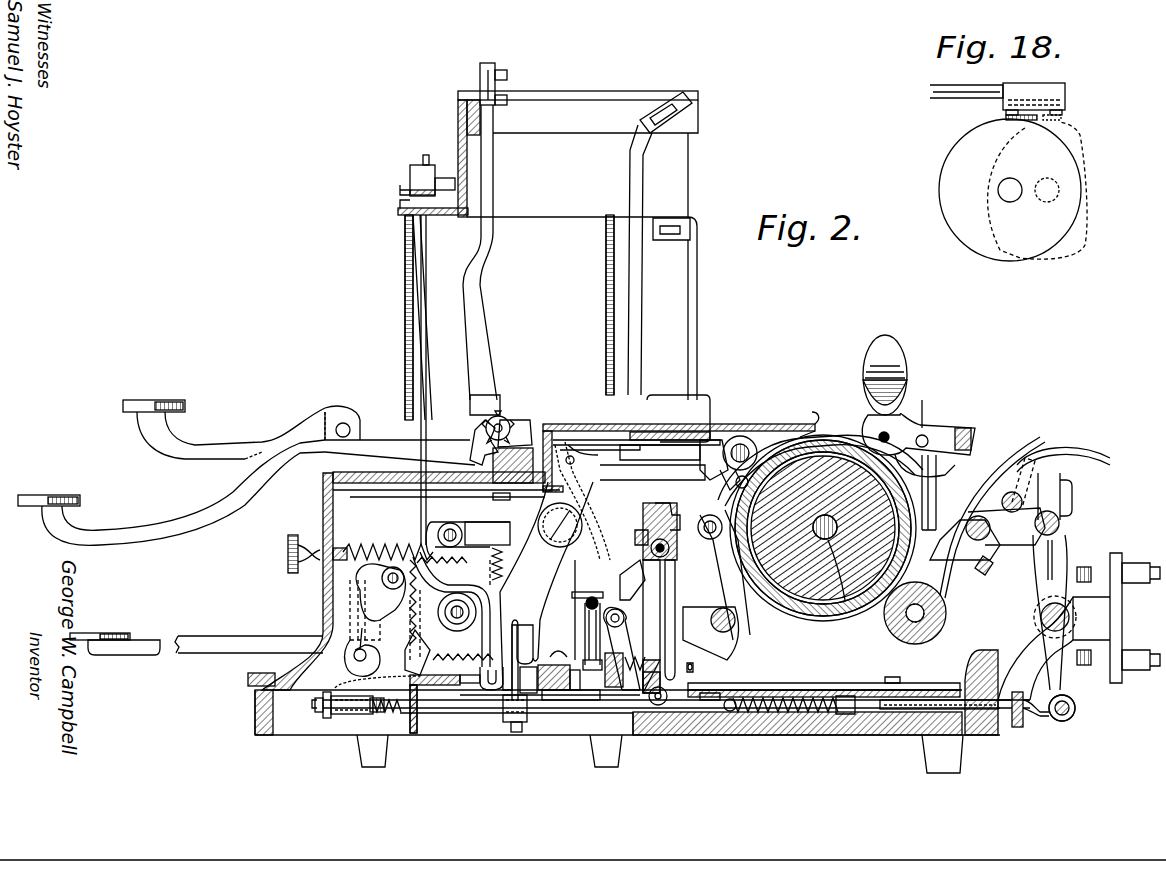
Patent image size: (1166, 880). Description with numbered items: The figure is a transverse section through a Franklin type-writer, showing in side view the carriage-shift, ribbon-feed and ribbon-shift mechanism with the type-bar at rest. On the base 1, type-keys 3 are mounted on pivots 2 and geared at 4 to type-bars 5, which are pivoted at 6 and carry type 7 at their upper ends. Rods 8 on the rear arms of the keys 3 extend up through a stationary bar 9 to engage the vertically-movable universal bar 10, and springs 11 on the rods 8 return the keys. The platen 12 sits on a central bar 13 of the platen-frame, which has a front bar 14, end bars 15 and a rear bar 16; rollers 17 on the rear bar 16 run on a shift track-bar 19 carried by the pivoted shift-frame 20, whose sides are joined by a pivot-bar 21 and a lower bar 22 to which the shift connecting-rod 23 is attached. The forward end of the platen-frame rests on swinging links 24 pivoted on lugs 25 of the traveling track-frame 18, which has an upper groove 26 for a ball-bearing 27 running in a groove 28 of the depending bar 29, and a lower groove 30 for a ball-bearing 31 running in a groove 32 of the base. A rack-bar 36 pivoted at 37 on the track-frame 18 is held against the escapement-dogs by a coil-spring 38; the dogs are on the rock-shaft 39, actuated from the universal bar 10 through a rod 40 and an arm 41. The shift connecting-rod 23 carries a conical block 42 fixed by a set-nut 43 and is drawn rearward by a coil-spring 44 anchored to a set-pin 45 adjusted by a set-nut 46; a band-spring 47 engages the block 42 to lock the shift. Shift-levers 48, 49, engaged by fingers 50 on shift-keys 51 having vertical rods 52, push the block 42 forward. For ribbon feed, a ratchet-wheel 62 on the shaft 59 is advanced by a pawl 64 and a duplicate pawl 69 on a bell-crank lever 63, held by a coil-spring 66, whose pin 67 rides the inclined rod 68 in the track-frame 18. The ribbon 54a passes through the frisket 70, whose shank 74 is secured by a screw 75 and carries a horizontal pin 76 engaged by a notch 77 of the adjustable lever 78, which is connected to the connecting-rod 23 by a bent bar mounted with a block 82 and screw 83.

In FIG. 2, the base 1 is at (322, 496).
In FIG. 2, the supports or pivots 2 is at (347, 422).
In FIG. 2, the type-keys 3 is at (186, 518).
In FIG. 2, the gearing 4 is at (496, 428).
In FIG. 2, the type-bars 5 is at (483, 300).
In FIG. 2, the type-bar pivot 6 is at (505, 425).
In FIG. 2, the type 7 is at (497, 76).
In FIG. 18, the type 7 is at (948, 90).
In FIG. 2, the rods 8 is at (405, 205).
In FIG. 2, the stationary bar 9 is at (460, 128).
In FIG. 2, the universal bar 10 is at (400, 188).
In FIG. 2, the springs 11 is at (408, 262).
In FIG. 2, the platen 12 is at (823, 460).
In FIG. 18, the platen 12 is at (1005, 250).
In FIG. 2, the central bar 13 is at (845, 605).
In FIG. 2, the front longitudinal bar 14 is at (706, 520).
In FIG. 2, the end bars 15 is at (986, 466).
In FIG. 2, the rear longitudinal bar 16 is at (992, 540).
In FIG. 2, the rollers 17 is at (1055, 497).
In FIG. 2, the track-frame 18 is at (665, 620).
In FIG. 2, the shift track-bar 19 is at (1060, 526).
In FIG. 2, the shift-frame 20 is at (1058, 660).
In FIG. 2, the pivot-bar 21 is at (1050, 610).
In FIG. 2, the bar 22 is at (1074, 705).
In FIG. 2, the shift connecting-rod 23 is at (450, 715).
In FIG. 2, the swinging links 24 is at (715, 570).
In FIG. 2, the lugs 25 is at (748, 625).
In FIG. 2, the groove 26 is at (652, 562).
In FIG. 2, the ball-bearing 27 is at (652, 546).
In FIG. 2, the groove 28 is at (652, 535).
In FIG. 2, the depending bar 29 is at (662, 515).
In FIG. 2, the groove 30 is at (693, 670).
In FIG. 2, the ball-bearing 31 is at (657, 706).
In FIG. 2, the groove 32 is at (672, 712).
In FIG. 2, the rack-bar 36 is at (622, 642).
In FIG. 2, the pivot 37 is at (640, 615).
In FIG. 2, the coil-spring 38 is at (632, 672).
In FIG. 2, the rock-shaft 39 is at (580, 697).
In FIG. 2, the rod 40 is at (425, 247).
In FIG. 2, the arm 41 is at (528, 685).
In FIG. 2, the conical block 42 is at (350, 708).
In FIG. 2, the set-nut 43 is at (322, 705).
In FIG. 2, the coil-spring 44 is at (760, 715).
In FIG. 2, the set-pin 45 is at (890, 712).
In FIG. 2, the set-nut 46 is at (1015, 727).
In FIG. 2, the band-spring 47 is at (403, 714).
In FIG. 2, the shift-lever 48 is at (360, 714).
In FIG. 2, the shift-lever 49 is at (378, 712).
In FIG. 2, the fingers 50 is at (380, 680).
In FIG. 2, the shift-keys 51 is at (215, 645).
In FIG. 2, the vertical rods 52 is at (406, 617).
In FIG. 18, the ribbon 54a is at (1062, 118).
In FIG. 2, the shaft 59 is at (450, 614).
In FIG. 2, the ratchet-wheel 62 is at (355, 612).
In FIG. 2, the bell-crank lever 63 is at (484, 527).
In FIG. 2, the pawl 64 is at (345, 594).
In FIG. 2, the coil-spring 66 is at (500, 540).
In FIG. 2, the pin 67 is at (578, 592).
In FIG. 2, the inclined rod 68 is at (592, 603).
In FIG. 2, the duplicate pawl 69 is at (436, 530).
In FIG. 2, the frisket 70 is at (670, 434).
In FIG. 2, the shank 74 is at (586, 432).
In FIG. 2, the screw 75 is at (498, 496).
In FIG. 2, the horizontal pin 76 is at (586, 470).
In FIG. 2, the notch 77 is at (588, 455).
In FIG. 2, the adjustable lever 78 is at (501, 591).
In FIG. 2, the block 82 is at (502, 722).
In FIG. 2, the screw 83 is at (517, 733).